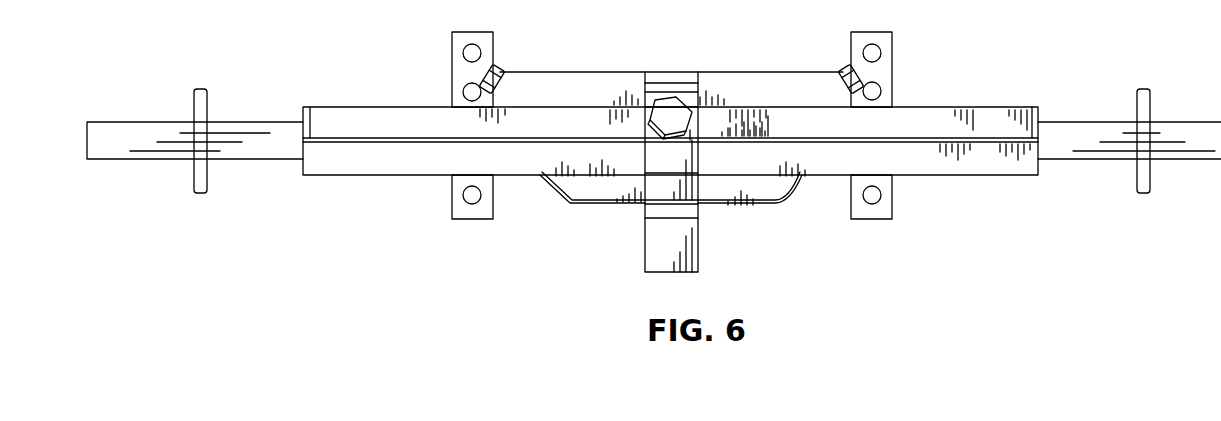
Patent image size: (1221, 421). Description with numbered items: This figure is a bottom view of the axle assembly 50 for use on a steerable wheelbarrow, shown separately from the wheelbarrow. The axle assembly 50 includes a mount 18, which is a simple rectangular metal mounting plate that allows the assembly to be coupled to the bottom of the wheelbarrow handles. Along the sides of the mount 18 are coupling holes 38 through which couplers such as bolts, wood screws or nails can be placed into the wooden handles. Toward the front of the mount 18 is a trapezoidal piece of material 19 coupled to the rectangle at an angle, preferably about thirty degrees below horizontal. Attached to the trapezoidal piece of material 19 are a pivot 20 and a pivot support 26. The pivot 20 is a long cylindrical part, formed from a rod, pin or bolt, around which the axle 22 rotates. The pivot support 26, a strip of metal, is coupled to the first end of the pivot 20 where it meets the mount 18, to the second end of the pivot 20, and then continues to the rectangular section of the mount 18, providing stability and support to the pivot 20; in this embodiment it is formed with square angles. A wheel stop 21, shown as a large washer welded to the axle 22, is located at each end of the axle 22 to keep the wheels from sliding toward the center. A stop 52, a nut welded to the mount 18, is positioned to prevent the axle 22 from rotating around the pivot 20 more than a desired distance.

The mount 18 is at (594, 82).
The trapezoidal piece of material 19 is at (575, 193).
The pivot 20 is at (667, 110).
The wheel stop 21 is at (200, 195).
The axle 22 is at (1063, 155).
The pivot support 26 is at (652, 248).
The coupling holes 38 is at (463, 53).
The axle assembly 50 is at (1067, 62).
The stop 52 is at (493, 66).